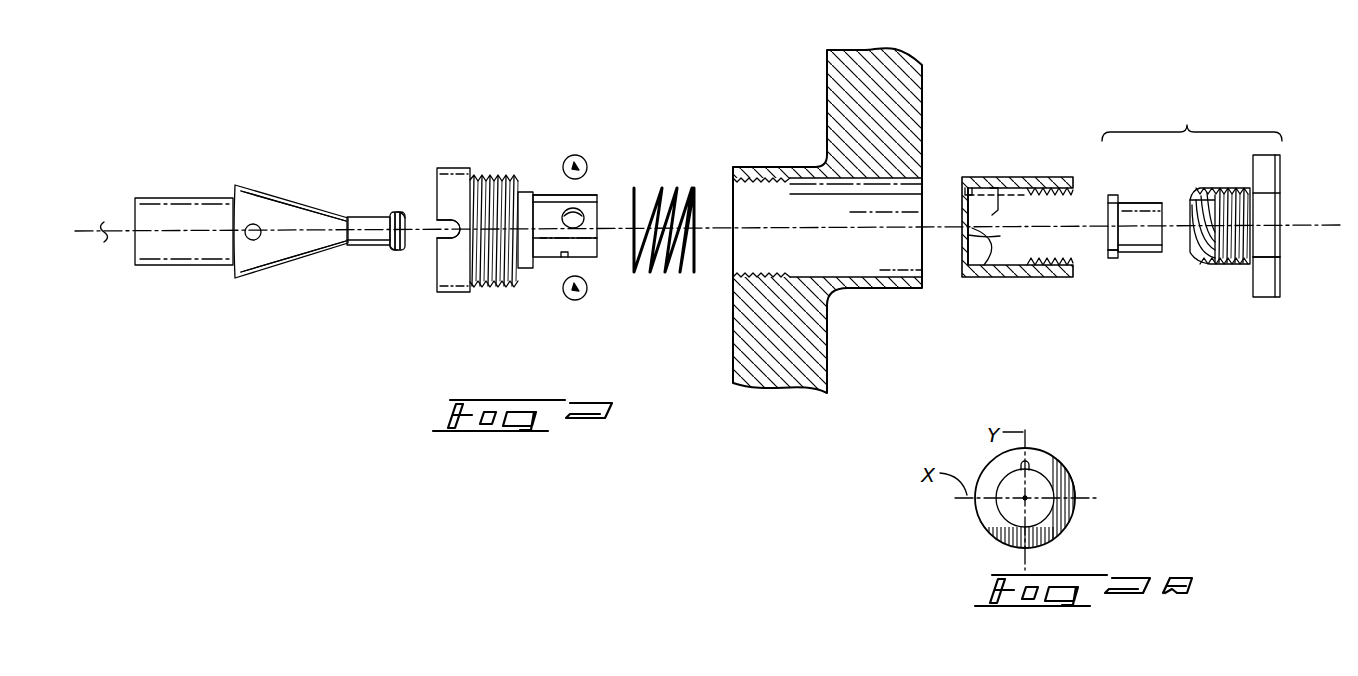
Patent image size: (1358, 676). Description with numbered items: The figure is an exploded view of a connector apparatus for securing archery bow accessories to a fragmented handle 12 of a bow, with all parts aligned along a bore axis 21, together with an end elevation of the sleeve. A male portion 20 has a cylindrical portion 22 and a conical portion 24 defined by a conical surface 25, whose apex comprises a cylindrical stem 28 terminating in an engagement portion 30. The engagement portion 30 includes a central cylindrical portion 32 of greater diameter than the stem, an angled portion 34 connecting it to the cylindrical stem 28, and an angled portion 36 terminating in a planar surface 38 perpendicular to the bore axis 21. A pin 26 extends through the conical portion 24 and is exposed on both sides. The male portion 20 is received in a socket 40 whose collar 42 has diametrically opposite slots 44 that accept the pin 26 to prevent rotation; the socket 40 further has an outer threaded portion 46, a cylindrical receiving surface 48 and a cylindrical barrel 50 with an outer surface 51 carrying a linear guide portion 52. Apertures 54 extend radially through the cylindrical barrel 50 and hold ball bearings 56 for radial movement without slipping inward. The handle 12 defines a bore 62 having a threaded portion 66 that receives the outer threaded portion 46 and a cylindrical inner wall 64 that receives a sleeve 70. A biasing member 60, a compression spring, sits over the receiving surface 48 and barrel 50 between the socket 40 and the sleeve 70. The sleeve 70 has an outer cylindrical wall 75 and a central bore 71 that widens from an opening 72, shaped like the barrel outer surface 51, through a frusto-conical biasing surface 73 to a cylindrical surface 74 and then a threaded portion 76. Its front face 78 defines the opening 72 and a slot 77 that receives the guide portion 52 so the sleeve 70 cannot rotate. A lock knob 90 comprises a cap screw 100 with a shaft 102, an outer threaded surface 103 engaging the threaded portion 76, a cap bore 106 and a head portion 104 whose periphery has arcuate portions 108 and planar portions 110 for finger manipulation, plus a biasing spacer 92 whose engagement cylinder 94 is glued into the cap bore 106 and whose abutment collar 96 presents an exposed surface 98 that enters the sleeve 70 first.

In FIG. 2, the handle 12 is at (827, 204).
In FIG. 2, the male portion 20 is at (190, 162).
In FIG. 2, the bore axis 21 is at (106, 243).
In FIG. 2A, the bore axis 21 is at (1027, 502).
In FIG. 2, the cylindrical portion 22 is at (181, 238).
In FIG. 2, the conical portion 24 is at (264, 256).
In FIG. 2, the conical surface 25 is at (299, 203).
In FIG. 2, the pin 26 is at (253, 224).
In FIG. 2, the cylindrical stem 28 is at (367, 217).
In FIG. 2, the engagement portion 30 is at (395, 254).
In FIG. 2, the central cylindrical portion 32 is at (394, 212).
In FIG. 2, the angled portion 34 is at (392, 213).
In FIG. 2, the angled portion 36 is at (405, 243).
In FIG. 2, the planar surface 38 is at (405, 225).
In FIG. 2, the socket 40 is at (503, 157).
In FIG. 2, the collar 42 is at (451, 163).
In FIG. 2, the slots 44 is at (440, 216).
In FIG. 2, the outer threaded portion 46 is at (494, 289).
In FIG. 2, the cylindrical receiving surface 48 is at (524, 270).
In FIG. 2, the cylindrical barrel 50 is at (582, 236).
In FIG. 2, the outer surface 51 is at (556, 252).
In FIG. 2, the linear guide portion 52 is at (585, 195).
In FIG. 2, the apertures 54 is at (564, 212).
In FIG. 2, the ball bearings 56 is at (577, 154).
In FIG. 2, the biasing member 60 is at (678, 274).
In FIG. 2, the bore 62 is at (740, 220).
In FIG. 2, the cylindrical inner wall 64 is at (855, 275).
In FIG. 2, the threaded portion 66 is at (759, 190).
In FIG. 2, the sleeve 70 is at (1001, 210).
In FIG. 2A, the sleeve 70 is at (1093, 455).
In FIG. 2, the central bore 71 is at (995, 212).
In FIG. 2, the opening 72 is at (987, 237).
In FIG. 2A, the opening 72 is at (998, 510).
In FIG. 2, the biasing surface 73 is at (968, 188).
In FIG. 2, the cylindrical surface 74 is at (1002, 258).
In FIG. 2, the outer cylindrical wall 75 is at (1038, 278).
In FIG. 2, the threaded portion 76 is at (1056, 205).
In FIG. 2, the slot 77 is at (963, 196).
In FIG. 2A, the slot 77 is at (1028, 465).
In FIG. 2A, the front face 78 is at (1064, 488).
In FIG. 2, the lock knob 90 is at (1192, 119).
In FIG. 2, the biasing spacer 92 is at (1150, 262).
In FIG. 2, the engagement cylinder 94 is at (1136, 224).
In FIG. 2, the abutment collar 96 is at (1112, 262).
In FIG. 2, the exposed surface 98 is at (1107, 213).
In FIG. 2, the cap screw 100 is at (1249, 262).
In FIG. 2, the shaft 102 is at (1222, 270).
In FIG. 2, the outer threaded surface 103 is at (1214, 190).
In FIG. 2, the head portion 104 is at (1287, 272).
In FIG. 2, the cap bore 106 is at (1190, 215).
In FIG. 2, the arcuate portions 108 is at (1270, 176).
In FIG. 2, the planar portions 110 is at (1267, 211).